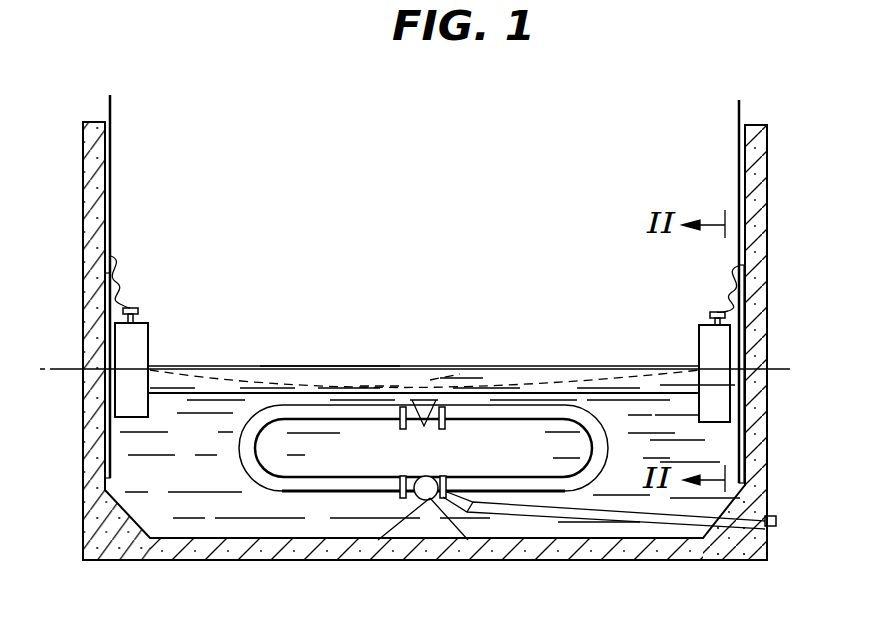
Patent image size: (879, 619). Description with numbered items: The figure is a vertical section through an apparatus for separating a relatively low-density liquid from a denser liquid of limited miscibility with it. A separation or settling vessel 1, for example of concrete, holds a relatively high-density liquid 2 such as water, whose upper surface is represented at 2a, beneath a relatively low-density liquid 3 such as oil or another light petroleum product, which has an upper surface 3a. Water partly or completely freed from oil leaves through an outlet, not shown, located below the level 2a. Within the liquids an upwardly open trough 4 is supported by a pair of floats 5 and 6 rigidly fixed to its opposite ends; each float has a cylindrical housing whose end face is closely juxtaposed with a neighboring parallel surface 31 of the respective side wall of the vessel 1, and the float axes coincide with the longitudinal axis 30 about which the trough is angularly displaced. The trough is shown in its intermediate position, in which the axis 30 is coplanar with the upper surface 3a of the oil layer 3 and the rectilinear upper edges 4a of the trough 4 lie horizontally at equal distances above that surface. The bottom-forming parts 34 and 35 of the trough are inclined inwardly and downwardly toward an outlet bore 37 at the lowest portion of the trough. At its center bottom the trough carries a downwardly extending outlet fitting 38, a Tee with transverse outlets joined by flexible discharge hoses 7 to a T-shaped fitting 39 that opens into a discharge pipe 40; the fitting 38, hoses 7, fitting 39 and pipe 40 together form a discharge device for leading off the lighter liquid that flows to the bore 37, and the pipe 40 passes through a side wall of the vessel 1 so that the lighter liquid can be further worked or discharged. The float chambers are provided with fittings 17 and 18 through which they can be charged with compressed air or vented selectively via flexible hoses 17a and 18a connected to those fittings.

The separation vessel 1 is at (757, 240).
The high-density liquid 2 is at (195, 512).
The upper surface of high-density liquid 2a is at (220, 373).
The low-density liquid 3 is at (537, 366).
The upper surface of low-density liquid 3a is at (288, 365).
The trough 4 is at (216, 384).
The upper edges of trough 4a is at (340, 365).
The float 5 is at (135, 343).
The float 6 is at (700, 351).
The flexible discharge hoses 7 is at (369, 486).
The fitting 17 is at (140, 309).
The fitting 18 is at (424, 294).
The flexible hose 17a is at (722, 294).
The flexible hose 18a is at (128, 292).
The longitudinal axis 30 is at (60, 368).
The parallel surface of side wall 31 is at (113, 188).
The bottom-forming part of trough 34 is at (380, 380).
The bottom-forming part of trough 35 is at (470, 378).
The outlet bore 37 is at (443, 365).
The outlet fitting 38 is at (425, 428).
The T-shaped fitting 39 is at (430, 498).
The discharge pipe 40 is at (653, 516).